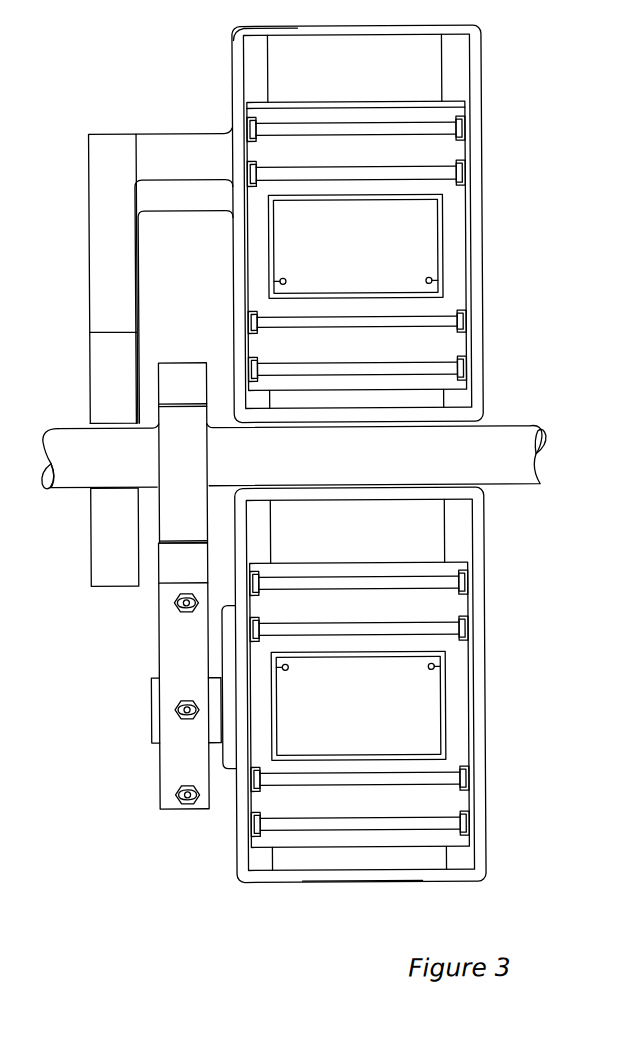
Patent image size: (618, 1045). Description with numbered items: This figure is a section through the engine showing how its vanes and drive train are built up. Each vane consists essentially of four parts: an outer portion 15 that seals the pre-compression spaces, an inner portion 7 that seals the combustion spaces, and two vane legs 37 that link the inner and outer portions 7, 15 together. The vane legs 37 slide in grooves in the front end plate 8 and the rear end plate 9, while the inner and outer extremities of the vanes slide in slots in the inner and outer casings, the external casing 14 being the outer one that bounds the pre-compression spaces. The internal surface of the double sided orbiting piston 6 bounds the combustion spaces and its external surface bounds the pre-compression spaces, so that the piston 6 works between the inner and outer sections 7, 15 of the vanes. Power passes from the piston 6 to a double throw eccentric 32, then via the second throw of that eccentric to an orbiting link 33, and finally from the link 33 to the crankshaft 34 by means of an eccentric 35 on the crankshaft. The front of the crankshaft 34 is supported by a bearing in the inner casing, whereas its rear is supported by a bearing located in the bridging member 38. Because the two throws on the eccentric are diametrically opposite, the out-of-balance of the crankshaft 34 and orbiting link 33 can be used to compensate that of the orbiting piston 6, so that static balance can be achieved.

The double sided orbiting piston 6 is at (356, 477).
The inner section of the sliding vanes 7 is at (358, 475).
The front end plate 8 is at (484, 93).
The rear end plate 9 is at (234, 68).
The external casing 14 is at (351, 882).
The outer section of the sliding vanes 15 is at (358, 476).
The double throw eccentric 32 is at (150, 704).
The orbiting link 33 is at (184, 676).
The crankshaft 34 is at (294, 455).
The eccentric 35 is at (182, 453).
The vane legs 37 is at (258, 259).
The bridging member 38 is at (162, 357).